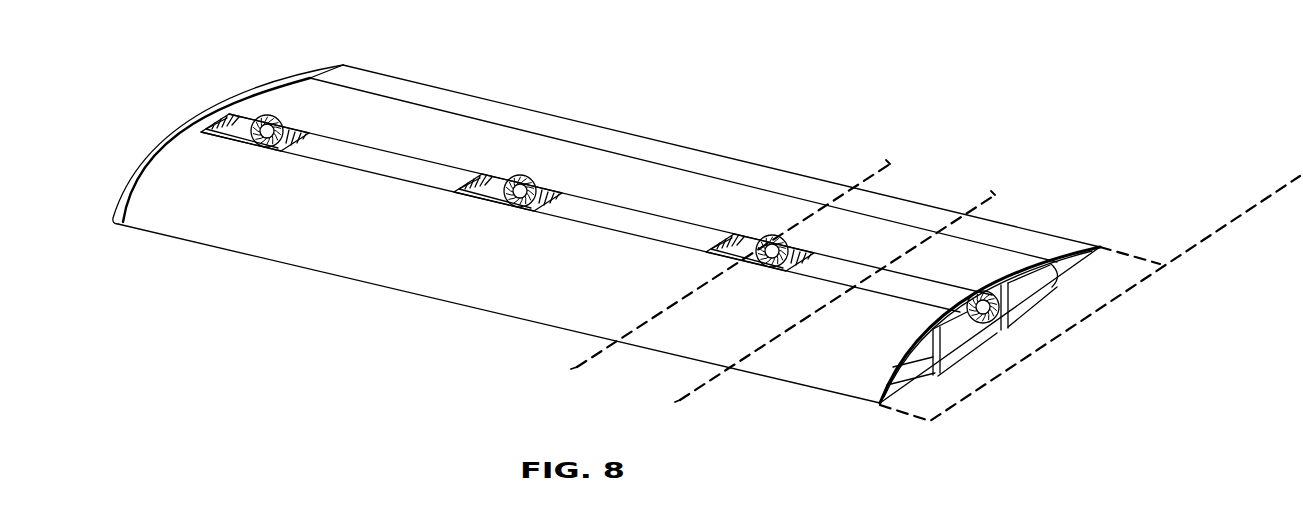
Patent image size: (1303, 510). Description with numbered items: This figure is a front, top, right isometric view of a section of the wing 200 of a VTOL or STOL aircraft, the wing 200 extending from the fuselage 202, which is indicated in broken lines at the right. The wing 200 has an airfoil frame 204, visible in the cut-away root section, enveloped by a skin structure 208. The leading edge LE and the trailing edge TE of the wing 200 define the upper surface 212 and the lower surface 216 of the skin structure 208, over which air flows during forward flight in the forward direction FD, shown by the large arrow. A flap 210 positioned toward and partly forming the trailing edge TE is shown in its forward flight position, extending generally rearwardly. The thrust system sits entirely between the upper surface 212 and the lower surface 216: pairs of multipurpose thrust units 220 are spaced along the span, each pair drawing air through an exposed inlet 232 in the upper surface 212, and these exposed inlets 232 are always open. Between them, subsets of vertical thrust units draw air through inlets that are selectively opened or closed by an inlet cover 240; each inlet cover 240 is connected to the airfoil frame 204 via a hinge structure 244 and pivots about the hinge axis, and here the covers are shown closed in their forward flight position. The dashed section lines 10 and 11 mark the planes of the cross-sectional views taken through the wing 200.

The wing 200 is at (1091, 136).
The fuselage 202 is at (1237, 213).
The airfoil frame 204 is at (941, 355).
The skin structure 208 is at (378, 263).
The flap 210 is at (905, 213).
The upper surface 212 is at (195, 170).
The lower surface 216 is at (502, 332).
The multipurpose thrust unit 220 is at (264, 124).
The exposed inlet 232 is at (229, 118).
The inlet cover 240 is at (375, 157).
The hinge structure 244 is at (412, 157).
The section line 10- 10 is at (703, 255).
The section line 11- 11 is at (809, 290).
The trailing edge TE is at (752, 152).
The leading edge LE is at (190, 238).
The forward direction FD is at (1056, 420).